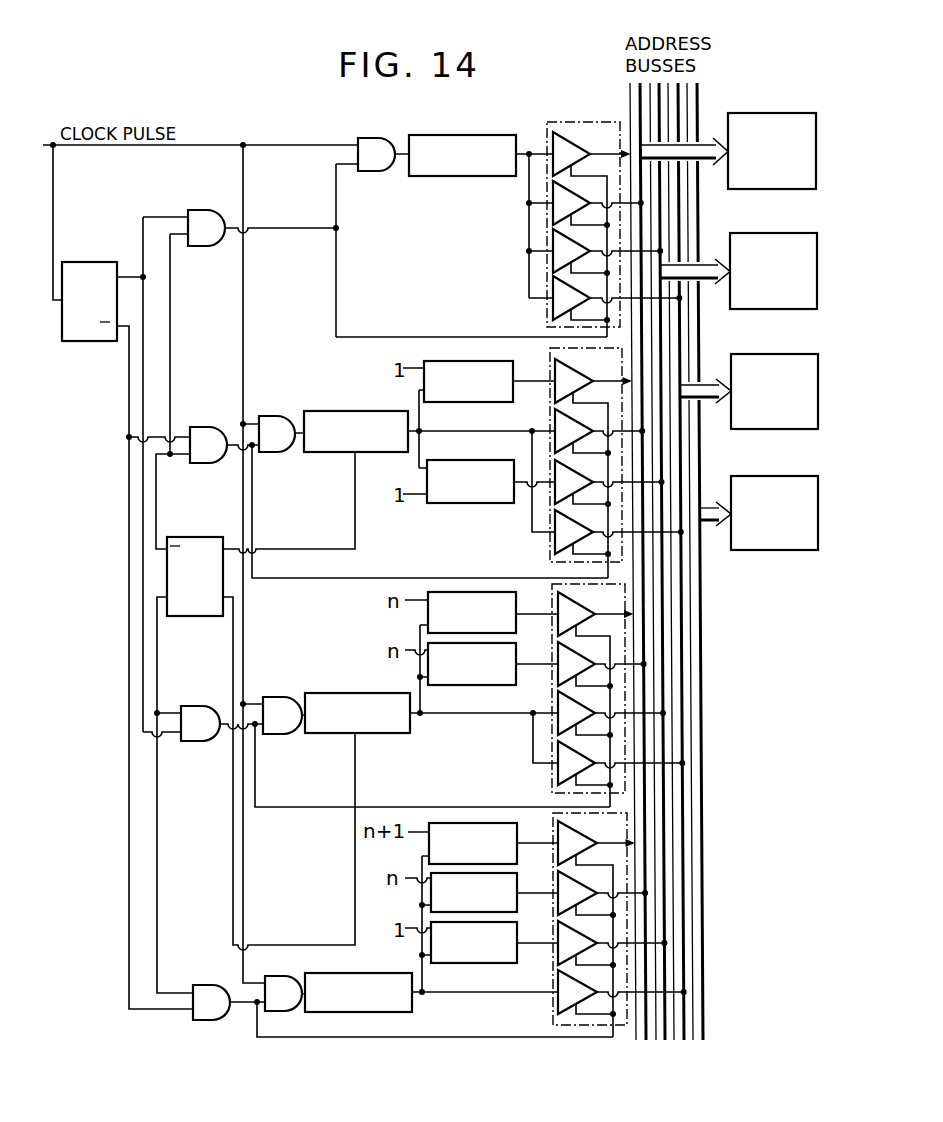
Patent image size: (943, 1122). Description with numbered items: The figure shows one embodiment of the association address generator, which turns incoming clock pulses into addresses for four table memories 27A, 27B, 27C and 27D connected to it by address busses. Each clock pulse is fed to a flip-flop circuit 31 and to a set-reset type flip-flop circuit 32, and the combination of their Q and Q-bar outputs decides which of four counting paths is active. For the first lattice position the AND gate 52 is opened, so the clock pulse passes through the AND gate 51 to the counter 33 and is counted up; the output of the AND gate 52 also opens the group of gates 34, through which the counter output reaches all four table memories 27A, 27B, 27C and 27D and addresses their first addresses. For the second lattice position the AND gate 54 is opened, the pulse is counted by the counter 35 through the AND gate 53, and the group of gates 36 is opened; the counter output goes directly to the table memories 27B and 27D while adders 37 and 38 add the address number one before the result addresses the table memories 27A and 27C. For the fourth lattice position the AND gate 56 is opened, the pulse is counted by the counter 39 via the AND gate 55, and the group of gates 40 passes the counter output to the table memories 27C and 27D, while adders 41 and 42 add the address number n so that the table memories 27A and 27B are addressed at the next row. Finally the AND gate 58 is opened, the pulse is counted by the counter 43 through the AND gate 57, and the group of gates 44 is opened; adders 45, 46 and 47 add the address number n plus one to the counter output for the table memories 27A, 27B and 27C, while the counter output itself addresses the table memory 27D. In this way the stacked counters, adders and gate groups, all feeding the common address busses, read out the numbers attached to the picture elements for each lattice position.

The table memory 27A is at (770, 113).
The table memory 27B is at (767, 233).
The table memory 27C is at (768, 354).
The table memory 27D is at (765, 476).
The flip-flop circuit 31 is at (86, 262).
The set-reset flip-flop circuit 32 is at (209, 537).
The counter 33 is at (478, 135).
The group of gates 34 is at (611, 147).
The counter 35 is at (350, 411).
The group of gates 36 is at (613, 373).
The adder 37 is at (505, 361).
The adder 38 is at (487, 503).
The counter 39 is at (358, 693).
The group of gates 40 is at (615, 608).
The adder 41 is at (516, 610).
The adder 42 is at (516, 664).
The counter 43 is at (373, 973).
The group of gates 44 is at (616, 837).
The adder 45 is at (517, 843).
The adder 46 is at (517, 892).
The adder 47 is at (517, 942).
The AND gate 51 is at (380, 138).
The AND gate 52 is at (205, 210).
The AND gate 53 is at (277, 416).
The AND gate 54 is at (209, 427).
The AND gate 55 is at (285, 697).
The AND gate 56 is at (204, 706).
The AND gate 57 is at (290, 970).
The AND gate 58 is at (211, 985).